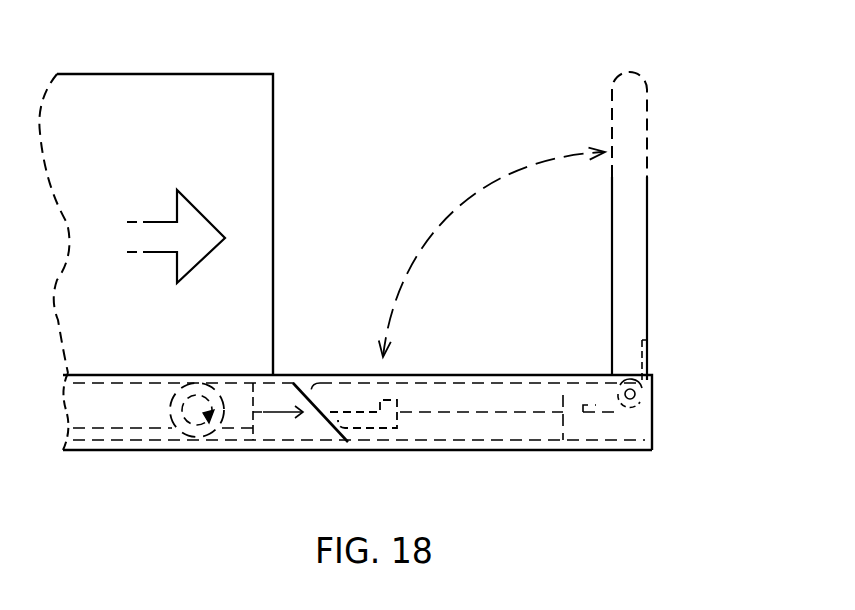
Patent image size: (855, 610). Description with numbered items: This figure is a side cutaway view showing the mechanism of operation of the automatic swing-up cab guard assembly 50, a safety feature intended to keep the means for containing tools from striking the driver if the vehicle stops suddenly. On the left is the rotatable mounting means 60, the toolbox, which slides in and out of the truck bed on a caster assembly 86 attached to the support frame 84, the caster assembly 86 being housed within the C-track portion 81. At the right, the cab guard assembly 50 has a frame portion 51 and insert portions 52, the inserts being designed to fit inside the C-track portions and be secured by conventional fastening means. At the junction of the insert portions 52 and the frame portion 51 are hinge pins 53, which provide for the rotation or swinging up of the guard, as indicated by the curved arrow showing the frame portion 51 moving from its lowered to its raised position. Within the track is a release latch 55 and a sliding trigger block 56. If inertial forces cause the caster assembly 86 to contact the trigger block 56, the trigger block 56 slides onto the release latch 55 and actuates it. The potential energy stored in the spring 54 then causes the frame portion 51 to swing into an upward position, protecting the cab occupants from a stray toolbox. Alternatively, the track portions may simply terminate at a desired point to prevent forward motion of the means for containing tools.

The swing-up cab guard assembly 50 is at (665, 201).
The frame portion 51 is at (620, 120).
The insert portions 52 is at (605, 432).
The hinge pins 53 is at (645, 397).
The spring 54 is at (648, 363).
The release latch 55 is at (397, 428).
The sliding trigger block 56 is at (307, 427).
The rotatable mounting means 60 is at (263, 117).
The C-track portion 81 is at (84, 448).
The support frame 84 is at (233, 418).
The caster assembly 86 is at (186, 420).